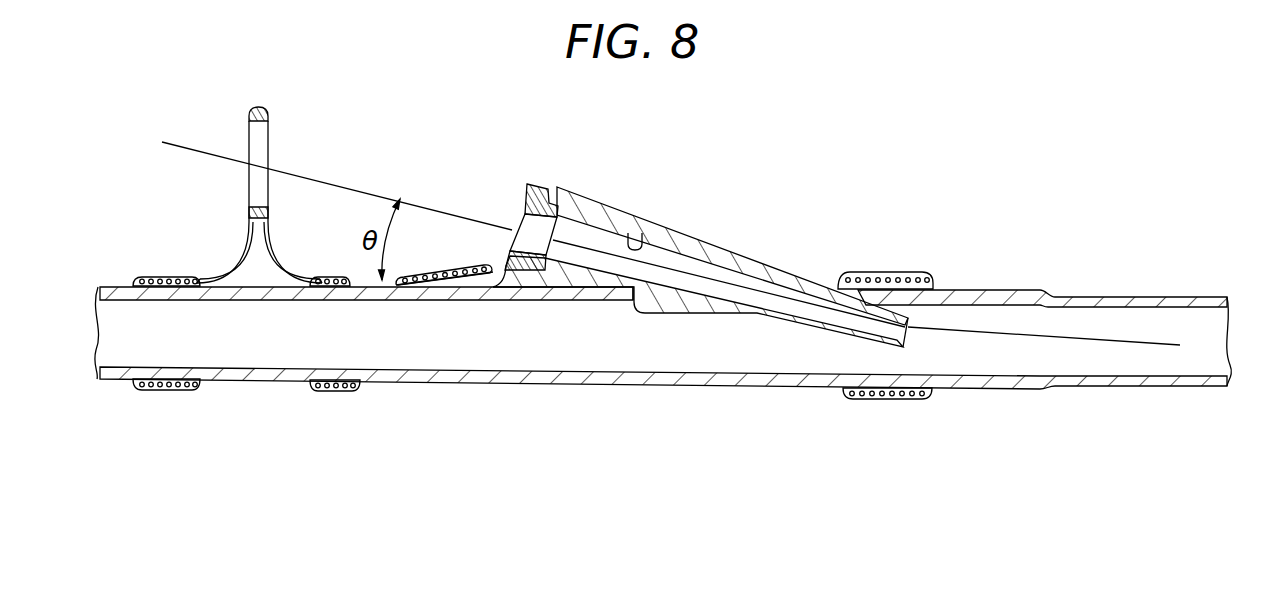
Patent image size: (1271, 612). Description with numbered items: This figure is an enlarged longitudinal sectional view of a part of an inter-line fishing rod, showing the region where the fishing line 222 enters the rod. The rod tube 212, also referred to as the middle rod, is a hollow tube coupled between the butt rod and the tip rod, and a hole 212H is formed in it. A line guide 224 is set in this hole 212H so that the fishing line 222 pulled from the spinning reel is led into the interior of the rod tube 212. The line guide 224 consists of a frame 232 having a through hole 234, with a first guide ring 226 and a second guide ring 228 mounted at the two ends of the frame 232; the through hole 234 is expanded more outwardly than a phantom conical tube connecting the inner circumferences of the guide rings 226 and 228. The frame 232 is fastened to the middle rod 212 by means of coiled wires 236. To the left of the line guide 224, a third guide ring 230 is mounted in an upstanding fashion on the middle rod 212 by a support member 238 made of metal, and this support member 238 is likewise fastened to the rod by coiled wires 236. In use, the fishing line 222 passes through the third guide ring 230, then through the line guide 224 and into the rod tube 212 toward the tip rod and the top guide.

The rod tube 212 is at (738, 380).
The hole 212H is at (641, 318).
The fishing line 222 is at (363, 192).
The line guide 224 is at (652, 258).
The first guide ring 226 is at (920, 290).
The second guide ring 228 is at (560, 188).
The third guide ring 230 is at (270, 111).
The frame 232 is at (757, 265).
The through hole 234 is at (634, 245).
The coiled wires 236 is at (446, 266).
The support member 238 is at (243, 263).